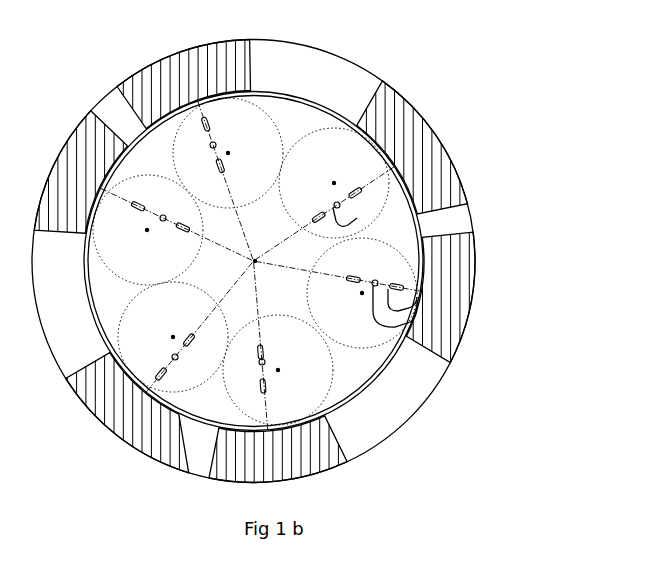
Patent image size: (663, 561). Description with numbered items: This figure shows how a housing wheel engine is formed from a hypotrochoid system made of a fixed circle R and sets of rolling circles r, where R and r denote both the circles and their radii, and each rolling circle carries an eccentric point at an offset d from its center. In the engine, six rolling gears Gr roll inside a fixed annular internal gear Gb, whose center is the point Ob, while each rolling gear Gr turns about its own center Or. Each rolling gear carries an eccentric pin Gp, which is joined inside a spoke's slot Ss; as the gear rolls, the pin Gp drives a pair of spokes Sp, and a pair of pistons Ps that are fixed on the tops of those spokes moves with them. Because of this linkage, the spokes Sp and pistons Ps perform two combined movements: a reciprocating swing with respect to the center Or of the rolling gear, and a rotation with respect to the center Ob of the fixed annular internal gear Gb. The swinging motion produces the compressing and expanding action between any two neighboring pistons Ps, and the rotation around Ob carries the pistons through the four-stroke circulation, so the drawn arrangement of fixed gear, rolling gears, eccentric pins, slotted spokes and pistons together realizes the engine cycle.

The fixed annular internal gear Gb is at (280, 97).
The rolling gear Gr is at (335, 112).
The spoke's slot Ss is at (330, 133).
The spoke Sp is at (365, 156).
The eccentric pin Gp is at (410, 186).
The piston Ps is at (428, 188).
The center of rolling gear Or is at (242, 261).
The center of the fixed annular internal gear Ob is at (267, 272).
The fixed circle R is at (163, 173).
The rolling circle r is at (259, 109).
The offset d is at (226, 152).